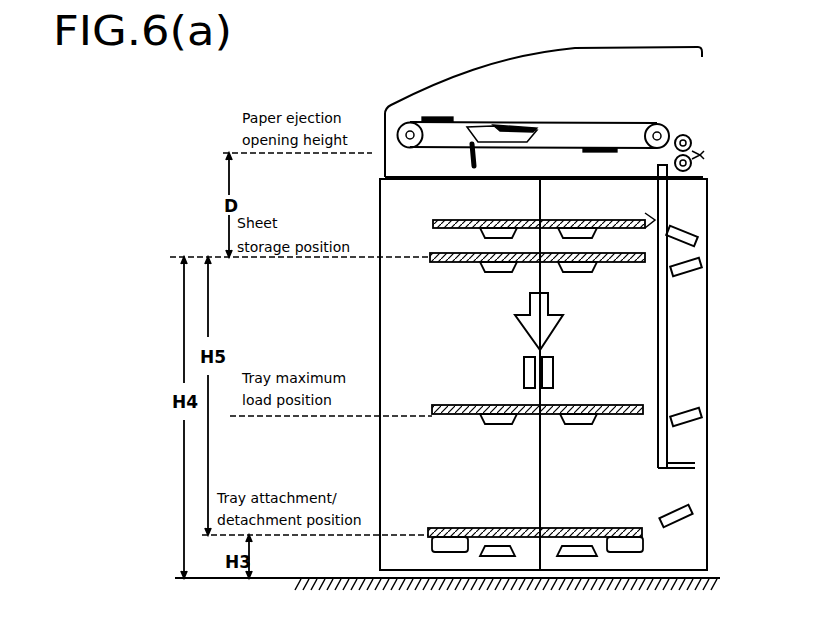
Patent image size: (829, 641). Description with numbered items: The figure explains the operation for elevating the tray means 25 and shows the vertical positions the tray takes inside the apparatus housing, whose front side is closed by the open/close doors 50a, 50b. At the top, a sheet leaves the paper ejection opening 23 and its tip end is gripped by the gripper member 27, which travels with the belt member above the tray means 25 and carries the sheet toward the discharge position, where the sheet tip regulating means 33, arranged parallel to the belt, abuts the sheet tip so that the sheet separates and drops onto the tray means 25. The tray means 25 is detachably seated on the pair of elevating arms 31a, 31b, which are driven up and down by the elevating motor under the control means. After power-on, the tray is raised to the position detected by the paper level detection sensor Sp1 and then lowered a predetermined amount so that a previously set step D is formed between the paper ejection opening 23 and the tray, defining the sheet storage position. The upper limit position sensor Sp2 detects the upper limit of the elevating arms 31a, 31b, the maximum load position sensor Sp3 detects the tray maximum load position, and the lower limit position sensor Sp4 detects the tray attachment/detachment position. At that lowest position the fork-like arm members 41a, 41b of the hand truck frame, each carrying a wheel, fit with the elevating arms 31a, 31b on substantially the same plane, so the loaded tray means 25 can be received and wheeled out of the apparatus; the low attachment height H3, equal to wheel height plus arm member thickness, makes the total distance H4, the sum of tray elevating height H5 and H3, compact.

The paper ejection opening 23 is at (669, 132).
The tray means 25 is at (480, 220).
The gripper member 27 is at (437, 117).
The sheet tip regulating means 33 is at (496, 123).
The elevating arm 31a is at (591, 273).
The elevating arm 31b is at (486, 273).
The arm member 41a is at (618, 540).
The arm member 41b is at (441, 540).
The open/close door 50a is at (678, 493).
The open/close door 50b is at (400, 212).
The paper level detection sensor Sp1 is at (647, 215).
The upper limit position sensor Sp2 is at (645, 262).
The maximum load position sensor Sp3 is at (643, 415).
The lower limit position sensor Sp4 is at (640, 540).